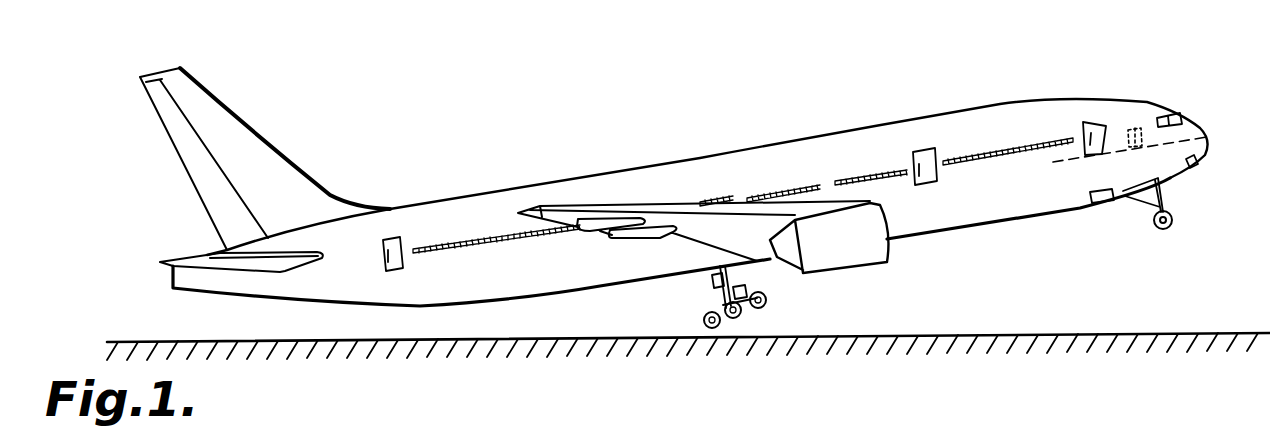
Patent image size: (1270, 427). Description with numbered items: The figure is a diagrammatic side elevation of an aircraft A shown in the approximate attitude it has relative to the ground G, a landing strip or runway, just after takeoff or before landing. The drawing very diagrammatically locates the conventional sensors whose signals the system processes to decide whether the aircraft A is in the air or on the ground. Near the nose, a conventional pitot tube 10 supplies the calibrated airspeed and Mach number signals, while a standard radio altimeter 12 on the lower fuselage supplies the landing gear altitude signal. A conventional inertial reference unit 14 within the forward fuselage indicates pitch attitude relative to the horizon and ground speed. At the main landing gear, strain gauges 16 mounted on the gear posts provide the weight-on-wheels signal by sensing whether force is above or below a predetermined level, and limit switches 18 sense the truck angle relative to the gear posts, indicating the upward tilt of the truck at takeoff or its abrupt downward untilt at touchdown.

The aircraft A is at (927, 118).
The ground G is at (1000, 333).
The pitot tube 10 is at (1197, 165).
The radio altimeter 12 is at (1105, 202).
The inertial reference unit 14 is at (1130, 147).
The strain gauges 16 is at (705, 277).
The limit switches 18 is at (748, 292).